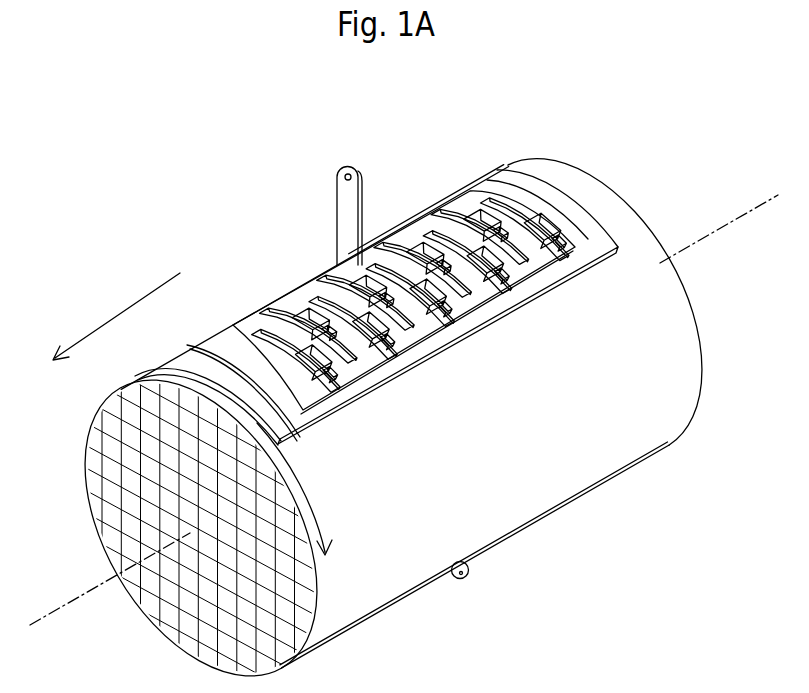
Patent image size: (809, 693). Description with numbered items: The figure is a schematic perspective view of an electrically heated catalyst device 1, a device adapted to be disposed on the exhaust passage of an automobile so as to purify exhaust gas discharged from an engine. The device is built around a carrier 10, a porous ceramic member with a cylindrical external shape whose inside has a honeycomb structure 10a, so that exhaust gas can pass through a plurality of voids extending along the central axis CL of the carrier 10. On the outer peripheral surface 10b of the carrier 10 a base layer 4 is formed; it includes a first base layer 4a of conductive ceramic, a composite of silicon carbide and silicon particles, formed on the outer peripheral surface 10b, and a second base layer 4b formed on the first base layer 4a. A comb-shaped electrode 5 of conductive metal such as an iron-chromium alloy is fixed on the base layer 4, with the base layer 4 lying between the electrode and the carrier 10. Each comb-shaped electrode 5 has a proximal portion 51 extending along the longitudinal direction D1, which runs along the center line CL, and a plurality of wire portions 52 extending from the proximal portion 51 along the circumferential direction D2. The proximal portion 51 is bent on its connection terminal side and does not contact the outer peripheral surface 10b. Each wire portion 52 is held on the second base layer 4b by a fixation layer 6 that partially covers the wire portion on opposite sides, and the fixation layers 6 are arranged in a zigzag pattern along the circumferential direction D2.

The electrically heated catalyst device 1 is at (287, 154).
The base layer 4 is at (494, 101).
The first base layer 4a is at (578, 212).
The second base layer 4b is at (498, 188).
The comb-shaped electrode 5 is at (352, 168).
The fixation layer 6 is at (373, 345).
The carrier 10 is at (684, 367).
The honeycomb structure 10a is at (132, 523).
The outer peripheral surface 10b is at (653, 288).
The proximal portion 51 is at (320, 282).
The wire portion 52 is at (280, 310).
The central axis CL is at (112, 578).
The longitudinal direction D1 is at (116, 316).
The circumferential direction D2 is at (298, 489).